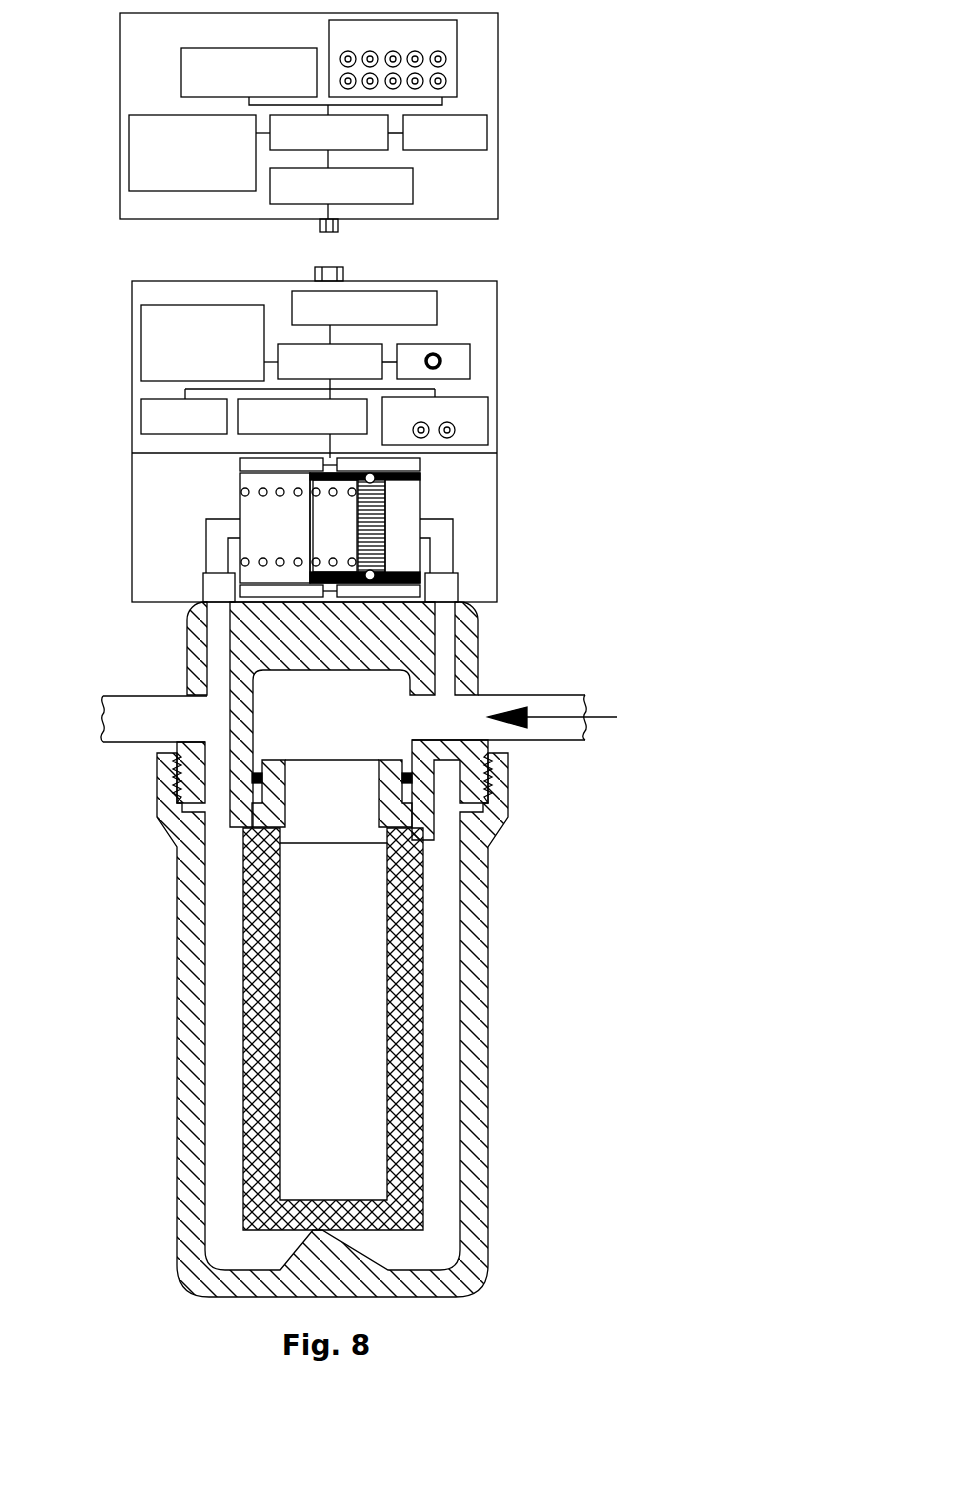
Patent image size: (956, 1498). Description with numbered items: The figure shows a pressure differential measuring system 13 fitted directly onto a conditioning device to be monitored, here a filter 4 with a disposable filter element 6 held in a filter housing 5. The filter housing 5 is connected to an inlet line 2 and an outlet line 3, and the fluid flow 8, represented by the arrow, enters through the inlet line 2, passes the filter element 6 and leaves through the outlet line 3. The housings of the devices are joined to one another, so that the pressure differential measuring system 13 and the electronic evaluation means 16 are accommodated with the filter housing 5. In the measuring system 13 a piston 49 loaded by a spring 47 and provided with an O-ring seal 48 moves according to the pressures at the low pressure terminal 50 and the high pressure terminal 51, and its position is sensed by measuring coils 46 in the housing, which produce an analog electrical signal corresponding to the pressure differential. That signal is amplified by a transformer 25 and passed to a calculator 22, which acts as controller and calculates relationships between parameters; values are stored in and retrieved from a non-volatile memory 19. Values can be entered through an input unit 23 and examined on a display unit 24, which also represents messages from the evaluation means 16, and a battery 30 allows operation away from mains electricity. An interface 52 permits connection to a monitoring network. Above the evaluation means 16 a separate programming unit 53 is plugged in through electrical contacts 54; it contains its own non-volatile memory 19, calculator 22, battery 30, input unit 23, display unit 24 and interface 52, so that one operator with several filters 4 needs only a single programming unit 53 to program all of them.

The inlet line 2 is at (540, 728).
The outlet line 3 is at (137, 718).
The filter 4 is at (487, 965).
The filter housing 5 is at (478, 672).
The filter element 6 is at (427, 1172).
The fluid flow 8 is at (555, 715).
The pressure differential measuring system 13 is at (463, 490).
The electronic evaluation means 16 is at (497, 357).
The non-volatile memory 19 is at (137, 155).
The calculator 22 is at (290, 349).
The input unit 23 is at (450, 76).
The display unit 24 is at (192, 89).
The transformer 25 is at (240, 432).
The battery 30 is at (480, 144).
The measuring coil 46 is at (290, 582).
The spring 47 is at (298, 496).
The O-ring seal 48 is at (385, 565).
The piston 49 is at (375, 510).
The low pressure terminal 50 is at (212, 590).
The high pressure terminal 51 is at (443, 587).
The interface 52 is at (413, 195).
The programming unit 53 is at (472, 180).
The electrical contacts 54 is at (340, 223).